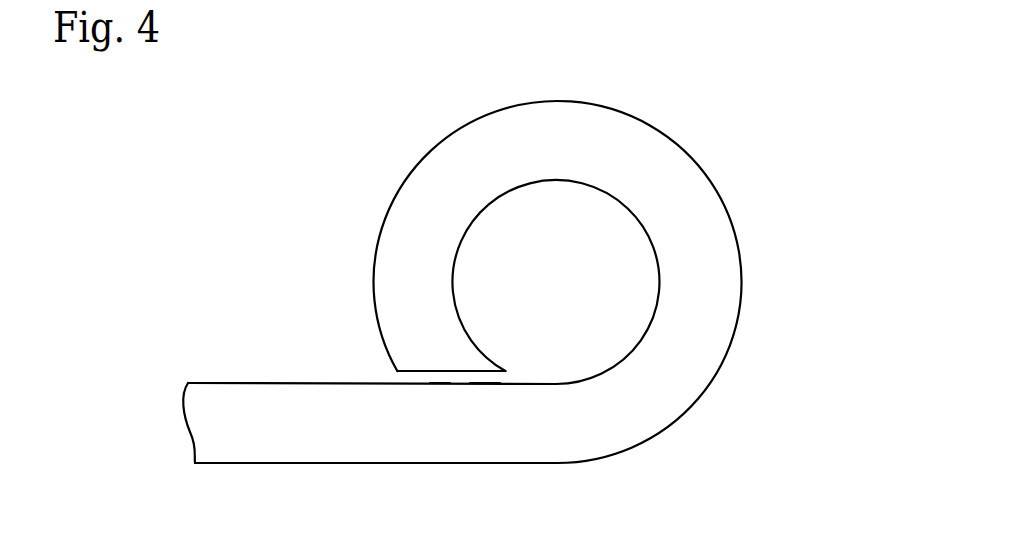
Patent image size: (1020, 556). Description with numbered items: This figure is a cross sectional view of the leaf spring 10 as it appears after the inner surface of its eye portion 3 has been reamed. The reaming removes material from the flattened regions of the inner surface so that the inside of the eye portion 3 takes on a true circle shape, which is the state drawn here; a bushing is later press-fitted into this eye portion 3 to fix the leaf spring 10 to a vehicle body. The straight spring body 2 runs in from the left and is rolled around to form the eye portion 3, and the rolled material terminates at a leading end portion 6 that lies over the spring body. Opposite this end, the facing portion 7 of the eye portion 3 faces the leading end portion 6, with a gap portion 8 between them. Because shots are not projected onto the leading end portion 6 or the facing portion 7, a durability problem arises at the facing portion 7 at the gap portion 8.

The base plate 2 is at (352, 442).
The eye portion 3 is at (720, 237).
The leading end portion 6 is at (418, 370).
The facing portion 7 is at (468, 381).
The gap portion 8 is at (440, 378).
The leaf spring 10 is at (705, 127).